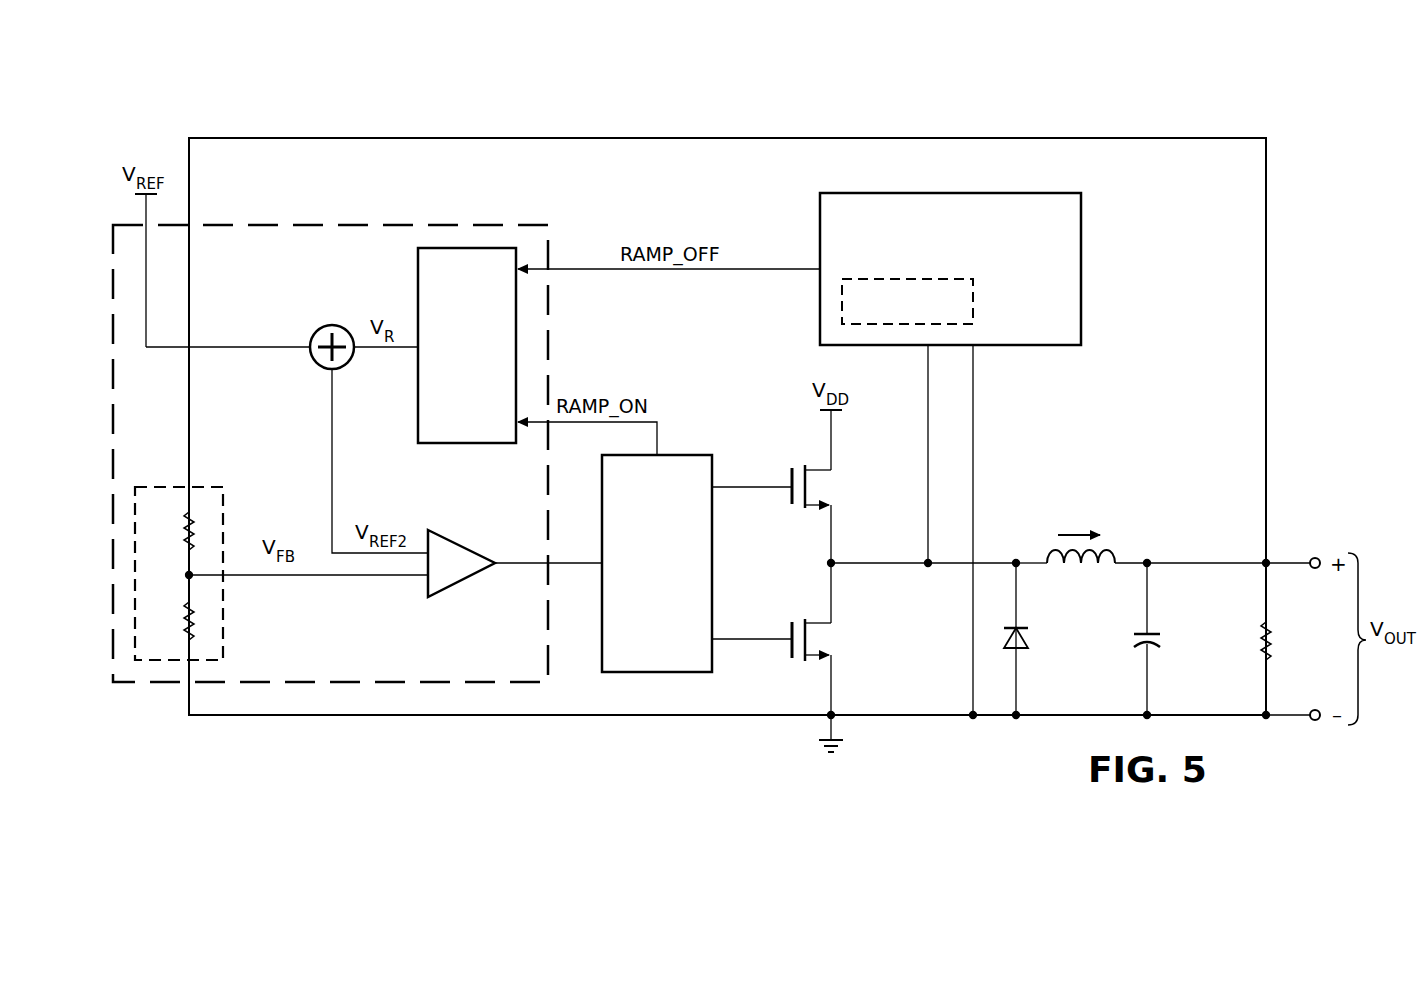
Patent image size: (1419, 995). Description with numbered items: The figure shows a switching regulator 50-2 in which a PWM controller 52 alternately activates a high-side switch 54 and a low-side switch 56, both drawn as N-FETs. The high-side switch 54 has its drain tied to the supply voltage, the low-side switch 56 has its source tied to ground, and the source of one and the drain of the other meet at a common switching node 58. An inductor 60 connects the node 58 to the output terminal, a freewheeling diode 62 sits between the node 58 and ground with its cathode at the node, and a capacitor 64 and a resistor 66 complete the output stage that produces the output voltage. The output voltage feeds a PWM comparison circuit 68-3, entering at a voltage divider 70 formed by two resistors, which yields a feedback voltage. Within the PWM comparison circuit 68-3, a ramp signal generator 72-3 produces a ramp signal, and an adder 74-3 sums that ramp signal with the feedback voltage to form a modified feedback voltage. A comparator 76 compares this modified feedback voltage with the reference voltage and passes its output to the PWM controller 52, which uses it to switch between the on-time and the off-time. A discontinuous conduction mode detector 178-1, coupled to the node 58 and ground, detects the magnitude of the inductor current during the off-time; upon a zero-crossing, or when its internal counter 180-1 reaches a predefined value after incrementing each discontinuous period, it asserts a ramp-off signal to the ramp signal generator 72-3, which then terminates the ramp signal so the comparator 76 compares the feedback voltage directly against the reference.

The switching regulator 50-2 is at (240, 100).
The PWM comparison circuit 68-3 is at (277, 222).
The adder 74-3 is at (318, 331).
The ramp signal generator 72-3 is at (443, 367).
The voltage divider 70 is at (226, 599).
The comparator 76 is at (462, 583).
The PWM controller 52 is at (644, 606).
The high-side switch 54 is at (789, 478).
The low-side switch 56 is at (789, 650).
The common switching node 58 is at (898, 568).
The inductor 60 is at (1108, 546).
The diode 62 is at (1030, 640).
The capacitor 64 is at (1162, 640).
The resistor 66 is at (1280, 640).
The discontinuous conduction mode detector 178-1 is at (1005, 269).
The counter 180-1 is at (975, 292).